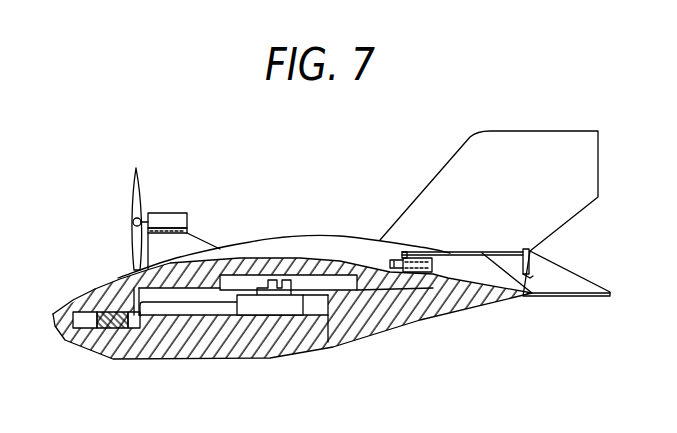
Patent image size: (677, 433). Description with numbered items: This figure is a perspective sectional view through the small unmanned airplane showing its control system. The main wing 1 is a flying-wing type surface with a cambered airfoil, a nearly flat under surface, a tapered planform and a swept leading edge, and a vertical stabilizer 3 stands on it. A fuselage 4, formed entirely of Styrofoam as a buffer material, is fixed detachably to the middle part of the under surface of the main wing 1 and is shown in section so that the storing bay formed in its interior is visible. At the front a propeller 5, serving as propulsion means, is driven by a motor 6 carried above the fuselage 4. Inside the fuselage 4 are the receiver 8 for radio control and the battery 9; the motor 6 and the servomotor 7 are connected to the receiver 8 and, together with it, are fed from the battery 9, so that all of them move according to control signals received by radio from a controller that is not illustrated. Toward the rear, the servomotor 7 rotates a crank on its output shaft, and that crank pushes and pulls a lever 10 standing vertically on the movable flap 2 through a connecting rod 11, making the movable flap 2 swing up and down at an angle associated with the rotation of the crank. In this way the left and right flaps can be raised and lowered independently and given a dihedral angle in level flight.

The main wing 1 is at (305, 235).
The movable flap 2 is at (568, 264).
The vertical stabilizer 3 is at (554, 131).
The fuselage 4 is at (93, 292).
The propeller 5 is at (131, 199).
The motor 6 is at (172, 213).
The servomotor 7 is at (436, 262).
The receiver 8 is at (278, 303).
The battery 9 is at (75, 334).
The lever 10 is at (533, 274).
The connecting rod 11 is at (462, 252).